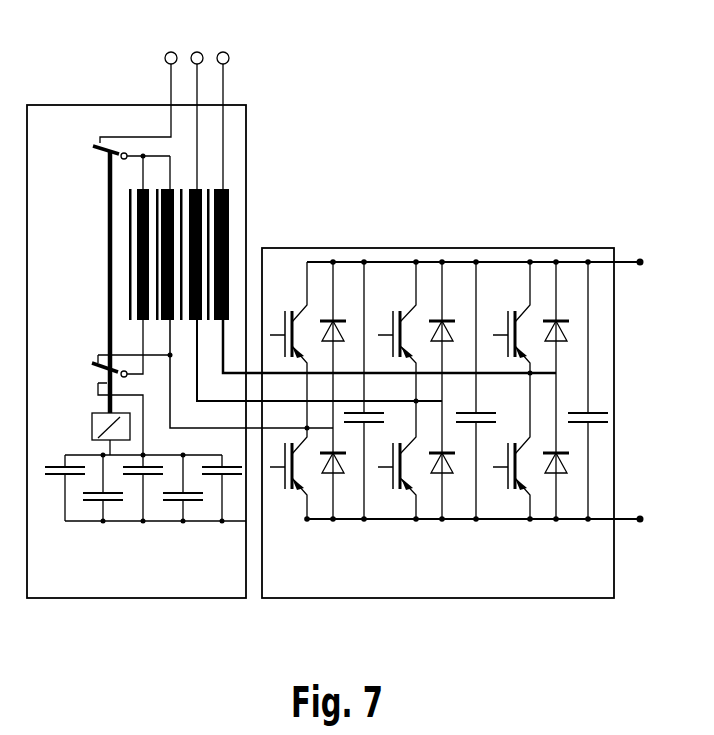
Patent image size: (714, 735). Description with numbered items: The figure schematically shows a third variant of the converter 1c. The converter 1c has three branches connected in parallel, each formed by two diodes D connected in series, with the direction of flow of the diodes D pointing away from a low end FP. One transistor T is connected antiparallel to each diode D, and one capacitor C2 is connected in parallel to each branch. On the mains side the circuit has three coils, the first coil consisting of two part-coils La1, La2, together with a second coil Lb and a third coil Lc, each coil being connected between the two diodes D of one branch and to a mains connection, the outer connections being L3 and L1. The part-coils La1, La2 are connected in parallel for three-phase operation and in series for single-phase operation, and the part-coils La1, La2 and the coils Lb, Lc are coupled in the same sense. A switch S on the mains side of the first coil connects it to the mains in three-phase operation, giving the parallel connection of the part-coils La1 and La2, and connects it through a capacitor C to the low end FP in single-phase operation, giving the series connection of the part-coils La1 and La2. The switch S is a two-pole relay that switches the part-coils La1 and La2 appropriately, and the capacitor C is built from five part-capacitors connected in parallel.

The converter 1c is at (447, 118).
The mains connection L3 is at (138, 74).
The mains connection L1 is at (239, 97).
The first part-coil La1 is at (140, 217).
The second part-coil La2 is at (162, 277).
The second coil Lb is at (202, 252).
The third coil Lc is at (227, 200).
The switch S is at (97, 415).
The capacitor C is at (237, 532).
The transistor T is at (511, 309).
The diode D is at (563, 328).
The capacitor C2 is at (600, 407).
The low end FP is at (458, 520).